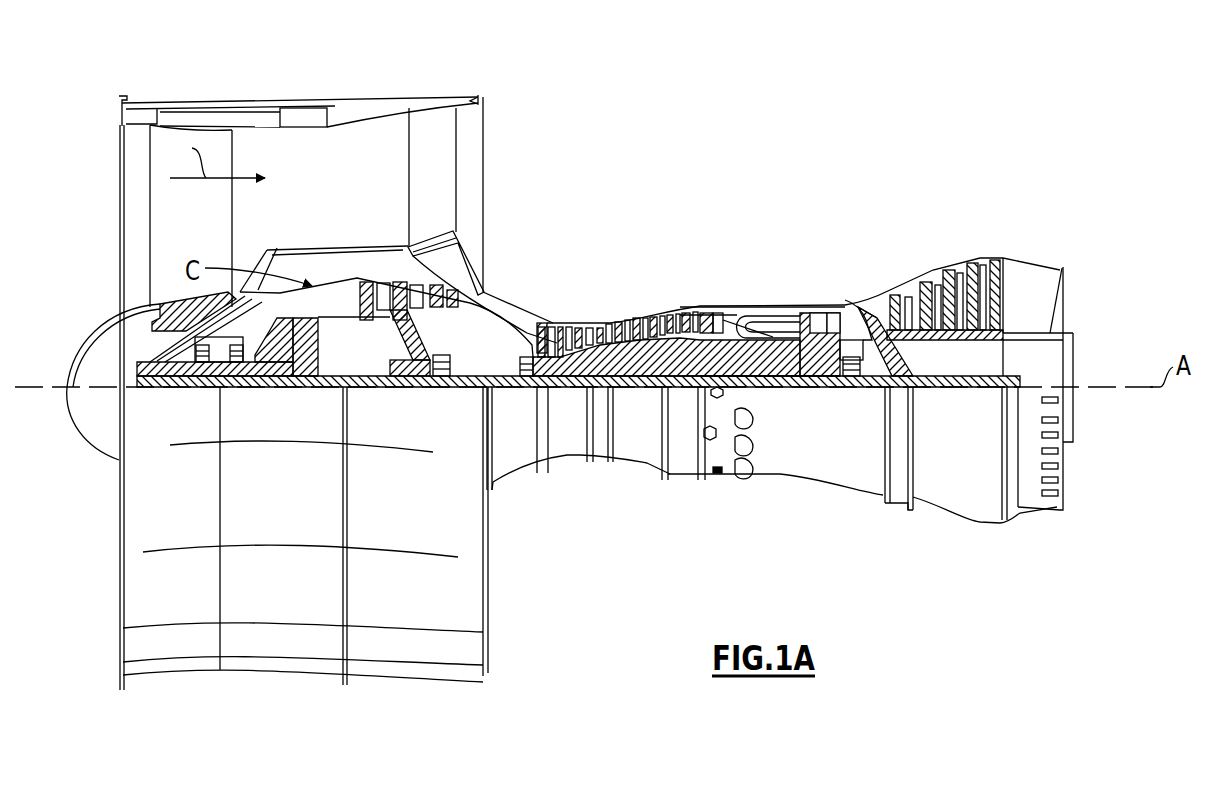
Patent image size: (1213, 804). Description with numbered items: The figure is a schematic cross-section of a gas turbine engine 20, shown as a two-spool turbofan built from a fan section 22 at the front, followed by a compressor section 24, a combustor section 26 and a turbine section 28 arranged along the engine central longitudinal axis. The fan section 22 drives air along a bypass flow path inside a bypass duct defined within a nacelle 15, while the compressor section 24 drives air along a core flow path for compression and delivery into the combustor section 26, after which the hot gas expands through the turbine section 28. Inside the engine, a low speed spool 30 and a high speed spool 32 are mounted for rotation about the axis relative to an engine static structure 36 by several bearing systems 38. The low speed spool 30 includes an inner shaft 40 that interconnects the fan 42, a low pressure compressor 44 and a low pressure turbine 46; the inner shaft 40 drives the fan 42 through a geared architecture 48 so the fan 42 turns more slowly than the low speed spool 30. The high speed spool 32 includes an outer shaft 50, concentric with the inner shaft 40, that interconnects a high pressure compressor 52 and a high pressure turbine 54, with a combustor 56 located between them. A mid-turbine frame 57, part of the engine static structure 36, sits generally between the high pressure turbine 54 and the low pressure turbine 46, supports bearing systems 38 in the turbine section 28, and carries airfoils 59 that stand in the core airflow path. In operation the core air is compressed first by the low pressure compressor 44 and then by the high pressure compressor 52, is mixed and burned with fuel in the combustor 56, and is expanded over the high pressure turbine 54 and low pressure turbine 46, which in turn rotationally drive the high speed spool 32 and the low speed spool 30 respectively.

The nacelle 15 is at (305, 106).
The gas turbine engine 20 is at (597, 385).
The fan section 22 is at (232, 96).
The compressor section 24 is at (535, 293).
The combustor section 26 is at (758, 281).
The turbine section 28 is at (905, 248).
The low speed spool 30 is at (641, 392).
The high speed spool 32 is at (680, 328).
The engine static structure 36 is at (682, 480).
The bearing systems 38 is at (444, 378).
The inner shaft 40 is at (512, 393).
The fan 42 is at (205, 230).
The low pressure compressor 44 is at (407, 292).
The low pressure turbine 46 is at (946, 262).
The geared architecture 48 is at (308, 374).
The outer shaft 50 is at (758, 390).
The high pressure compressor 52 is at (617, 355).
The high pressure turbine 54 is at (820, 307).
The combustor 56 is at (759, 328).
The mid-turbine frame 57 is at (866, 291).
The airfoils 59 is at (895, 355).